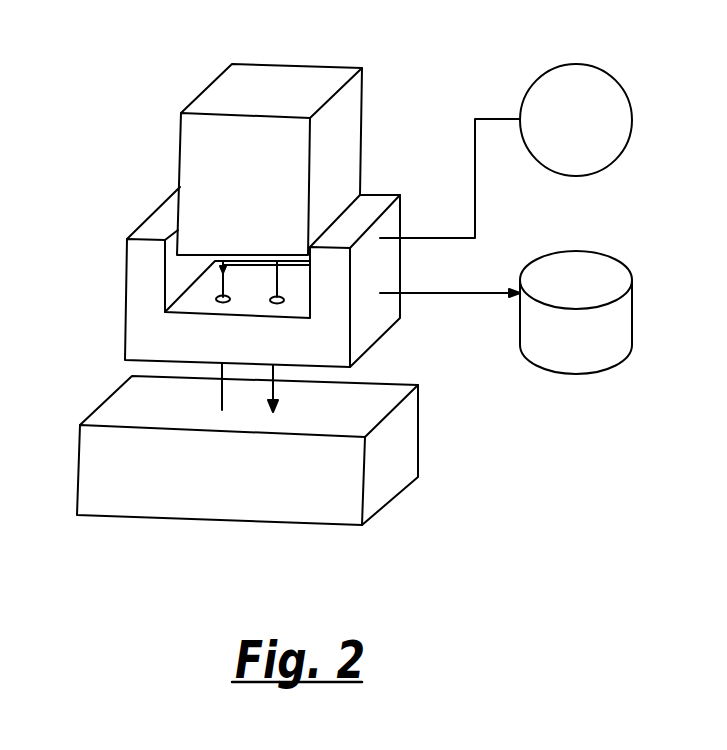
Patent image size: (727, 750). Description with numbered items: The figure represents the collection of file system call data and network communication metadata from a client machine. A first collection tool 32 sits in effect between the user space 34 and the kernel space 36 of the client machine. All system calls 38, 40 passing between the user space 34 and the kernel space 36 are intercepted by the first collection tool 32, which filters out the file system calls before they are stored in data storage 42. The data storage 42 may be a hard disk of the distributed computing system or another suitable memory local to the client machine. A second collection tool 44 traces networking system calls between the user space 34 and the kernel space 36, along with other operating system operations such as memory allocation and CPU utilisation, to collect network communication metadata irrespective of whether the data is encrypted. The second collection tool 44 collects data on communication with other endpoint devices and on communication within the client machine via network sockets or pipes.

The first collection tool 32 is at (145, 283).
The user space 34 is at (342, 123).
The kernel space 36 is at (388, 472).
The system call 38 is at (222, 390).
The system call 40 is at (350, 383).
The data storage 42 is at (603, 272).
The second collection tool 44 is at (597, 110).